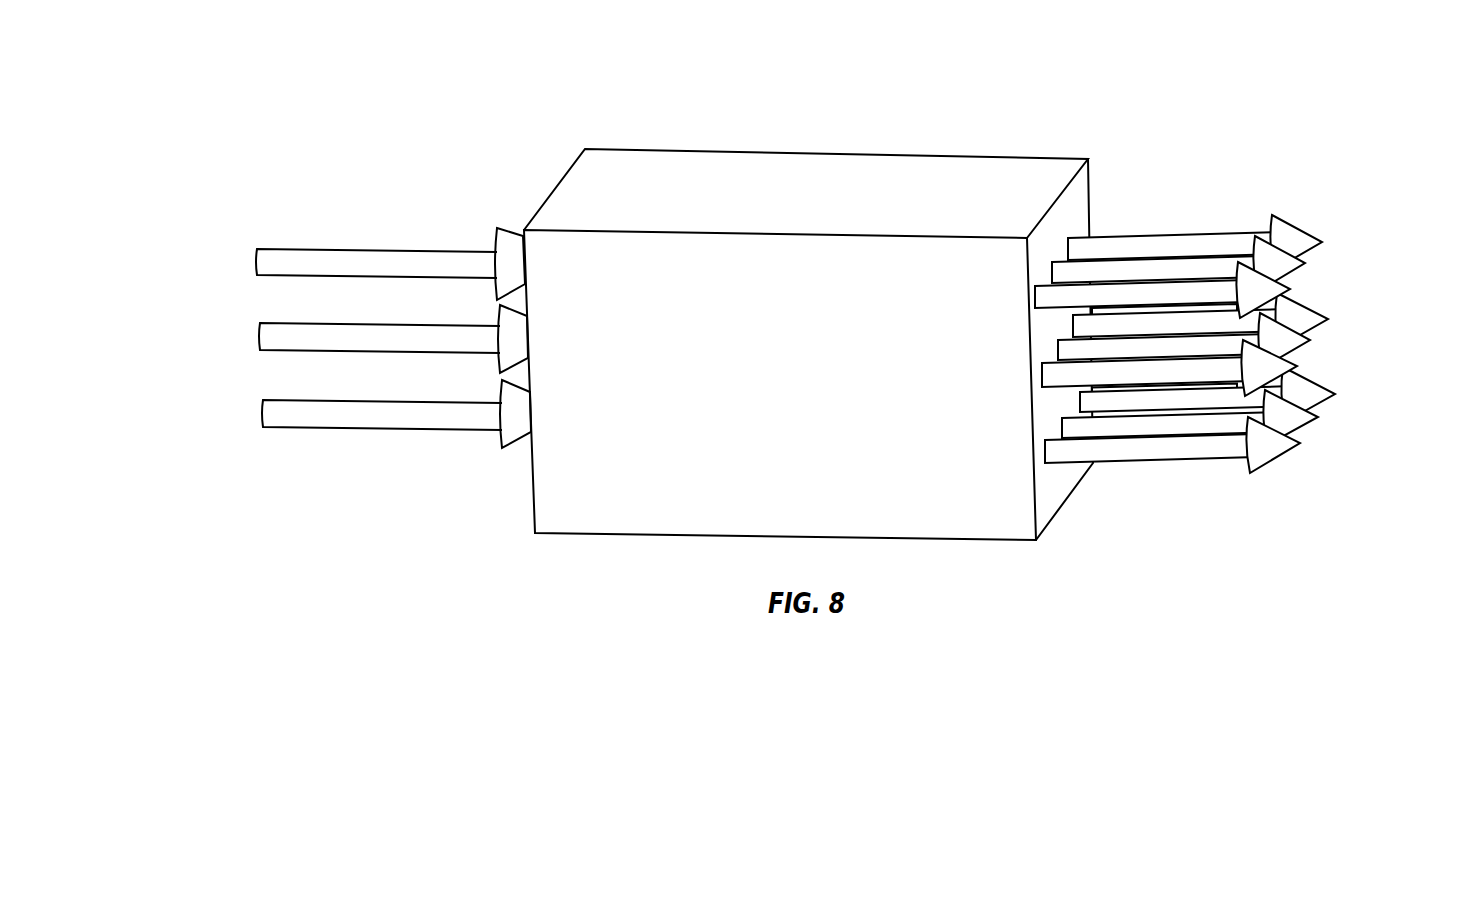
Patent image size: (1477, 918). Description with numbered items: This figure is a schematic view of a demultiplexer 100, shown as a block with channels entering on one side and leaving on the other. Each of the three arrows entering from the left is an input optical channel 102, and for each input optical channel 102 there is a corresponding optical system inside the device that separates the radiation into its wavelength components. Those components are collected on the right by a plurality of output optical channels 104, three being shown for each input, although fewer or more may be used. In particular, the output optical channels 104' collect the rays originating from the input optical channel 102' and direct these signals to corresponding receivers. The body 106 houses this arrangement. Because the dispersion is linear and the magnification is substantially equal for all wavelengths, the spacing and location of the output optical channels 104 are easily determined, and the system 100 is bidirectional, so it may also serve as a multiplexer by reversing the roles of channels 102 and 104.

The demultiplexer 100 is at (796, 284).
The input optical channels 102 is at (335, 323).
The input optical channel 102' is at (390, 249).
The output optical channels 104 is at (1244, 321).
The output optical channels 104' is at (1178, 244).
The housing / splitter block 106 is at (787, 152).